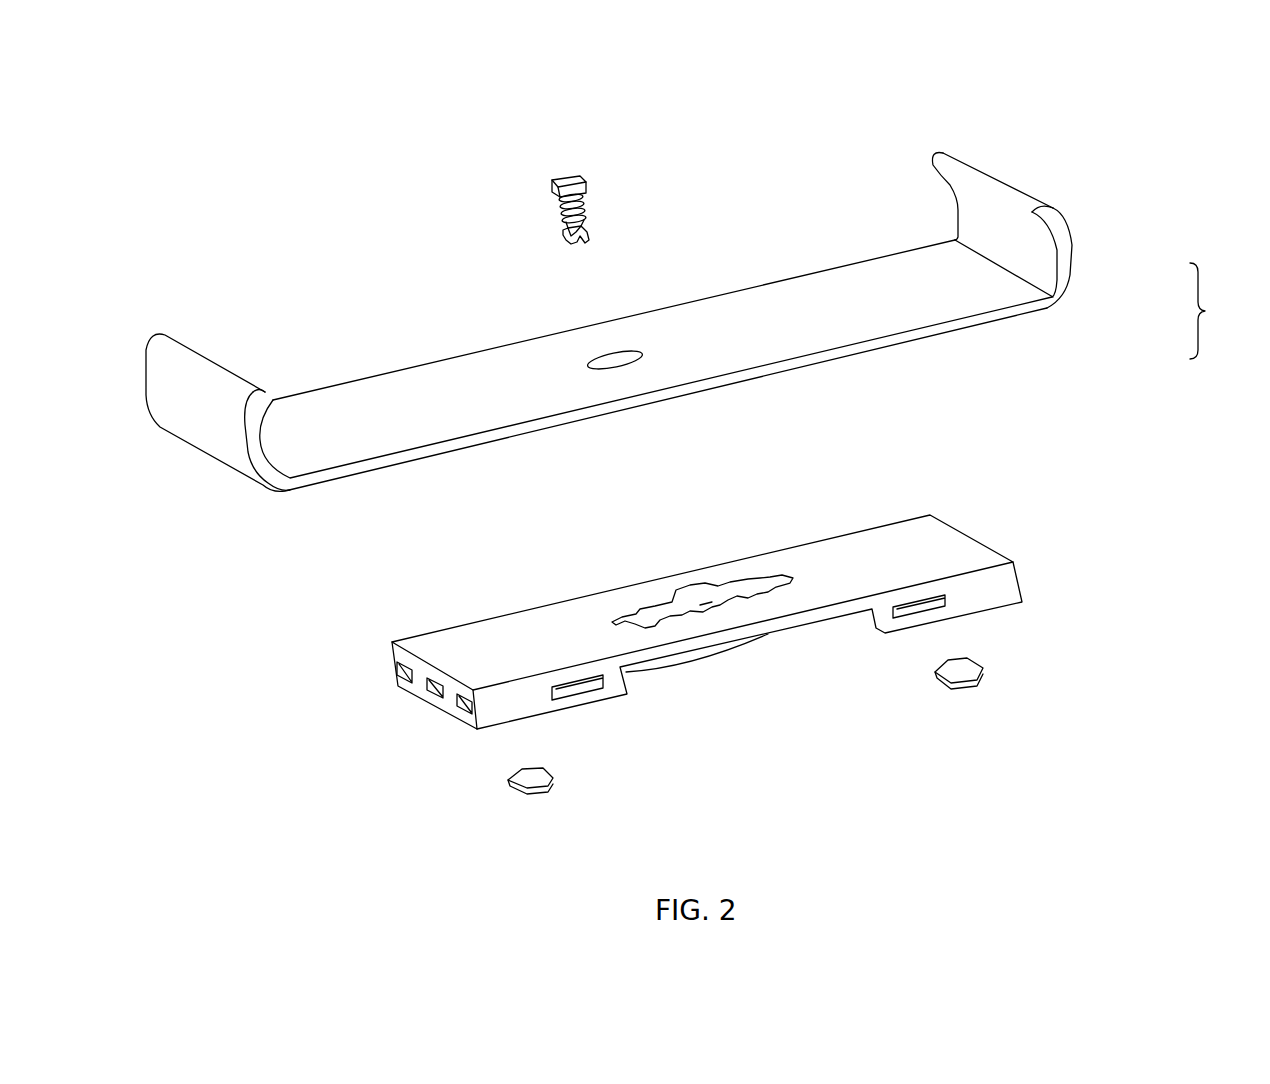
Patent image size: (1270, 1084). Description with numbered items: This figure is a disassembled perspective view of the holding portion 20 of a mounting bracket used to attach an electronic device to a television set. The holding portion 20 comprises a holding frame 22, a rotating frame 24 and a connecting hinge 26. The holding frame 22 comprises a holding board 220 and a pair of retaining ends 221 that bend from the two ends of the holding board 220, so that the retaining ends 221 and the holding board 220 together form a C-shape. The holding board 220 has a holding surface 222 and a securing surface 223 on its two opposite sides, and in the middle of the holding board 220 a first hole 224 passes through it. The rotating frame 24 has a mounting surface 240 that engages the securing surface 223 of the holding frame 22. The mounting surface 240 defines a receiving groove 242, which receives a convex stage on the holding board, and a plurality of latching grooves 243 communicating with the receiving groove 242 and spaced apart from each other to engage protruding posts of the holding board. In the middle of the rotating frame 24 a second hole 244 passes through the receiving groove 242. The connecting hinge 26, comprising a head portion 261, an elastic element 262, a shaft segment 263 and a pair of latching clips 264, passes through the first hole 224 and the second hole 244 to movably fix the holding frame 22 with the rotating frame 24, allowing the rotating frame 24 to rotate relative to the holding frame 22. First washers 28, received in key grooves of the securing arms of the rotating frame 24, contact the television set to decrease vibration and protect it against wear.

The holding portion 20 is at (719, 120).
The holding frame 22 is at (769, 238).
The holding board 220 is at (1222, 311).
The retaining ends 221 is at (1057, 220).
The holding surface 222 is at (960, 297).
The securing surface 223 is at (980, 330).
The first hole 224 is at (612, 357).
The rotating frame 24 is at (993, 510).
The mounting surface 240 is at (535, 617).
The receiving groove 242 is at (660, 600).
The latching grooves 243 is at (618, 622).
The second hole 244 is at (705, 612).
The connecting hinge 26 is at (578, 161).
The head portion 261 is at (553, 185).
The elastic element 262 is at (558, 203).
The shaft segment 263 is at (562, 216).
The latching clips 264 is at (563, 238).
The first washer 28 is at (967, 673).